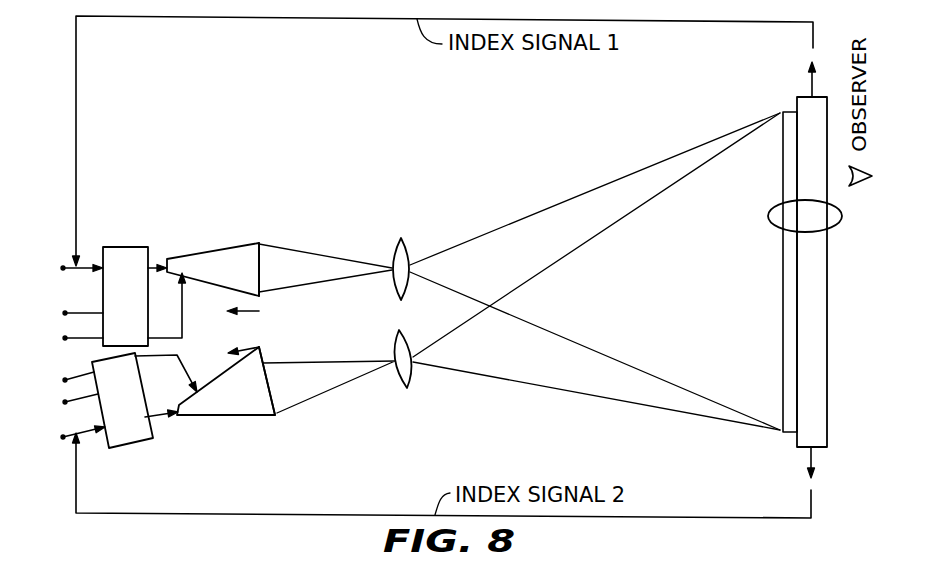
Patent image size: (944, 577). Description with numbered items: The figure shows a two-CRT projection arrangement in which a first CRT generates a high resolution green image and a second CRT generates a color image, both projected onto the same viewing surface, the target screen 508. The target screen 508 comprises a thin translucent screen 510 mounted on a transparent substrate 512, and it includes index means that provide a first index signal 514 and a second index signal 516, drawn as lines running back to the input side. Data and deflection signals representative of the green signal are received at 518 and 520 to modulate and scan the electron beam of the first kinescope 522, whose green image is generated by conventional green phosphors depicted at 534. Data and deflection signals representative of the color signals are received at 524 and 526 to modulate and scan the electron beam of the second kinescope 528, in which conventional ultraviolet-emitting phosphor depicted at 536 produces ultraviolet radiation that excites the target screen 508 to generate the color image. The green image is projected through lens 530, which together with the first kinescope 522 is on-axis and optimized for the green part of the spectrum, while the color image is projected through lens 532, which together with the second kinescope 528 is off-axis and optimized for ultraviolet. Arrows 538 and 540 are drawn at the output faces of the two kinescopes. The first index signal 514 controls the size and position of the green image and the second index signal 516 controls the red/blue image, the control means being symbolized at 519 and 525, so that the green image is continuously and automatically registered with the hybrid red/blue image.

The target screen 508 is at (768, 216).
The thin translucent screen 510 is at (790, 256).
The transparent substrate 512 is at (812, 283).
The first index signal 514 is at (157, 17).
The second index signal 516 is at (170, 513).
The data signal input 518 is at (65, 312).
The control means 519 is at (131, 247).
The deflection signal input 520 is at (65, 337).
The first kinescope 522 is at (228, 250).
The data signal input 524 is at (65, 403).
The control means 525 is at (124, 432).
The deflection signal input 526 is at (65, 379).
The second kinescope 528 is at (250, 417).
The lens 530 is at (402, 240).
The lens 532 is at (408, 387).
The P-22G phosphors 534 is at (259, 243).
The P-16 phosphor 536 is at (273, 416).
The scan direction arrow 538 is at (263, 297).
The scan direction arrow 540 is at (262, 350).